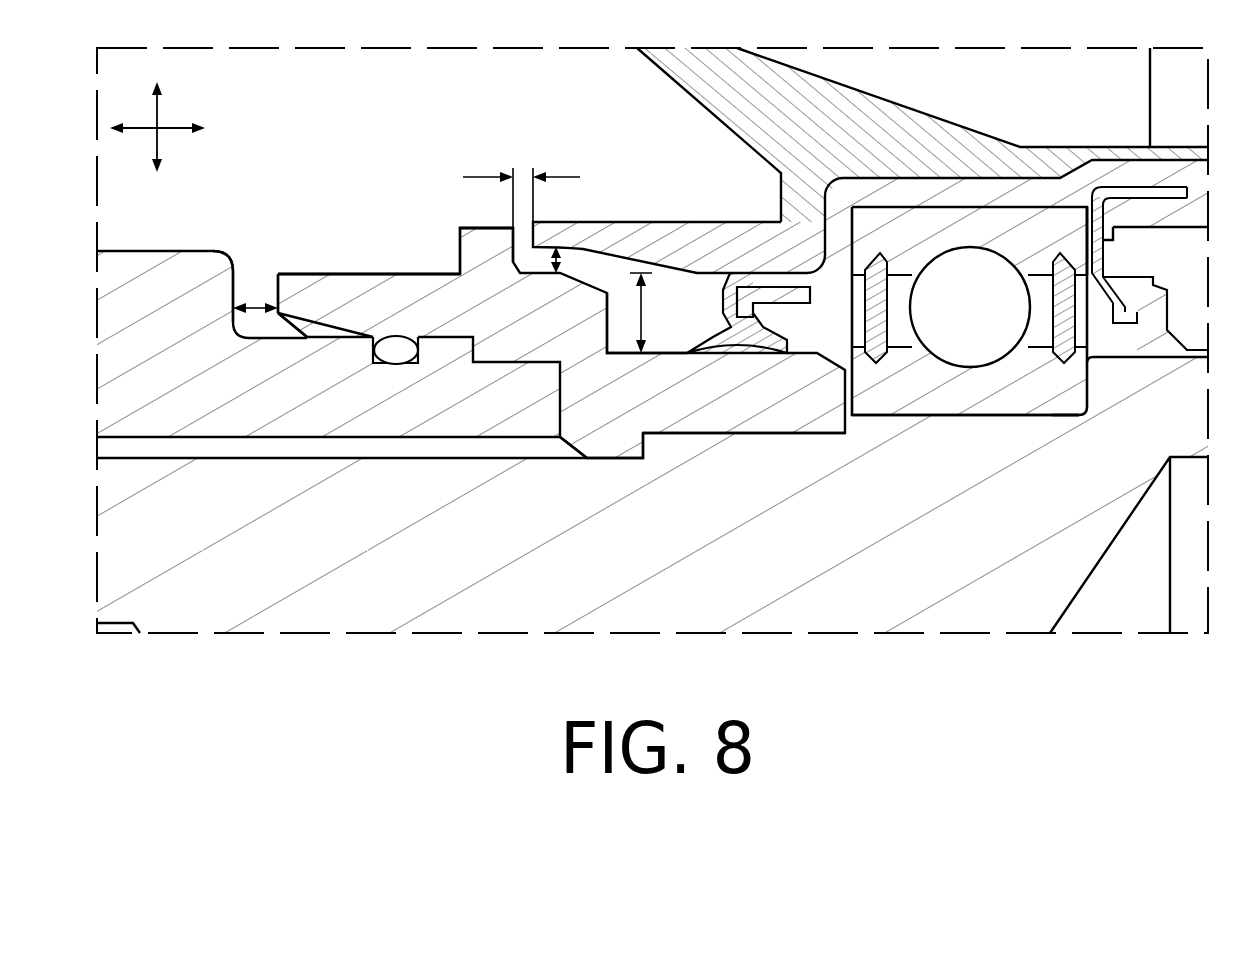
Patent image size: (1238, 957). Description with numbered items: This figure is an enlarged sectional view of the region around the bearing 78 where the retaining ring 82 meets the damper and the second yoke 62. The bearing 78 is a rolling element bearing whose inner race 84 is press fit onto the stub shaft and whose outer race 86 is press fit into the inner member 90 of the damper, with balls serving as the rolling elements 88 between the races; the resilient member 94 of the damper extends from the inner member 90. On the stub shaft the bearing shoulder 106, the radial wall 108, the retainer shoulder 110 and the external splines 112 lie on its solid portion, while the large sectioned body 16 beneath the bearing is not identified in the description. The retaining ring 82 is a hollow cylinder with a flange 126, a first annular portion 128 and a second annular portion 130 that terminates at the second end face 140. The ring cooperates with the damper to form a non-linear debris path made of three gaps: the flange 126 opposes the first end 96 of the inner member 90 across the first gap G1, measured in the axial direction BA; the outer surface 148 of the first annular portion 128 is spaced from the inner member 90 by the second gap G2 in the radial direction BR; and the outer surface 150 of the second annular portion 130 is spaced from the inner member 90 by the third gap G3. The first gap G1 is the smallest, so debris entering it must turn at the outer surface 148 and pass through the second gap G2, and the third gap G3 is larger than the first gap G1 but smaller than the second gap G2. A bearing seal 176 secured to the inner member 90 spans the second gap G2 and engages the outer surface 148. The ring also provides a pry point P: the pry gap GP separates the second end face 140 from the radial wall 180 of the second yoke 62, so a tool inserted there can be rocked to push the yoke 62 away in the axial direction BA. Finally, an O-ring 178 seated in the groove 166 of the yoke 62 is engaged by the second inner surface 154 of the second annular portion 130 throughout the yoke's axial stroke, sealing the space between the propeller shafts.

The shaft 16 is at (714, 582).
The second yoke 62 is at (157, 251).
The bearing 78 is at (1052, 428).
The retaining ring 82 is at (342, 191).
The inner race 84 is at (886, 402).
The outer race 86 is at (1022, 228).
The rolling elements 88 is at (984, 319).
The inner member 90 is at (768, 260).
The resilient member 94 is at (690, 92).
The first end 96 is at (535, 241).
The bearing shoulder 106 is at (938, 416).
The radial wall 108 is at (1090, 397).
The retainer shoulder 110 is at (697, 434).
The external splines 112 is at (331, 459).
The flange 126 is at (490, 226).
The first annular portion 128 is at (777, 414).
The second annular portion 130 is at (400, 287).
The second end face 140 is at (263, 285).
The outer surface 148 is at (621, 354).
The outer surface 150 is at (335, 274).
The second inner surface 154 is at (330, 343).
The groove 166 is at (415, 366).
The bearing seal 176 is at (773, 324).
The O-ring 178 is at (396, 352).
The radial wall 180 is at (231, 287).
The axial direction BA is at (170, 127).
The radial direction BR is at (163, 140).
The first gap G1 is at (578, 177).
The second gap G2 is at (647, 313).
The third gap G3 is at (560, 262).
The pry gap GP is at (257, 315).
The pry point P is at (248, 282).